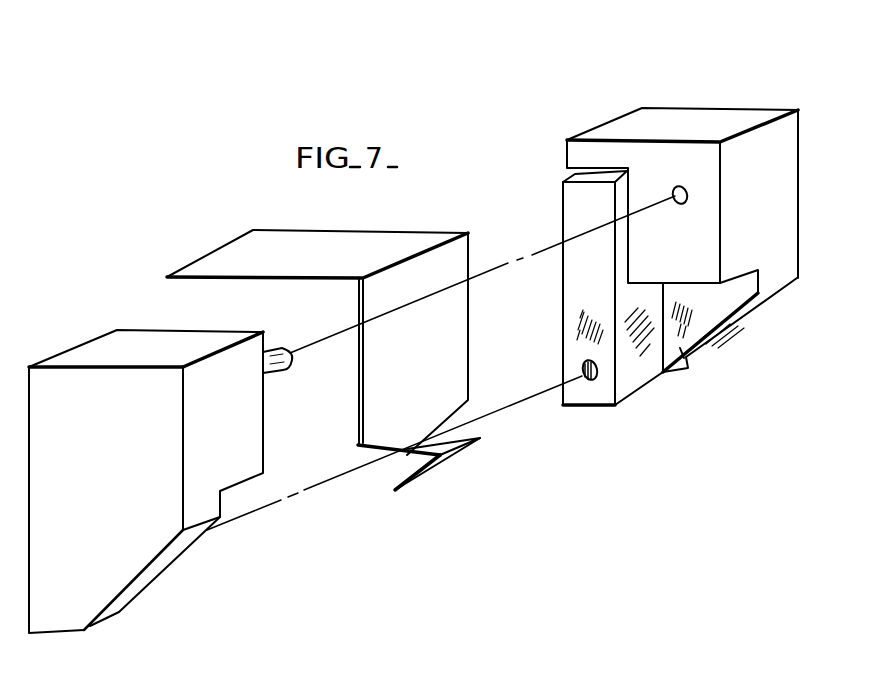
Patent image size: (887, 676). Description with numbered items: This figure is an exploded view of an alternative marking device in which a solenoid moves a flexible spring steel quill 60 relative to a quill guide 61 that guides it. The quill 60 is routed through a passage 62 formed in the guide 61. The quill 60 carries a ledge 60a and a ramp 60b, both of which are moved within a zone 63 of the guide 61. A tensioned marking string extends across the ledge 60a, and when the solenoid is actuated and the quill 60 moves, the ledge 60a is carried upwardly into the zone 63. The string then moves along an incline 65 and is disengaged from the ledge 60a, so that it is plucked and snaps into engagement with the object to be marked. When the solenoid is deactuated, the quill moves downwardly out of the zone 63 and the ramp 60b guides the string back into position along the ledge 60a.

The flexible spring steel quill 60 is at (341, 240).
The ledge 60a is at (458, 440).
The ramp 60b is at (437, 466).
The quill guide 61 is at (697, 107).
The passage 62 is at (626, 292).
The zone 63 is at (694, 356).
The incline 65 is at (748, 310).